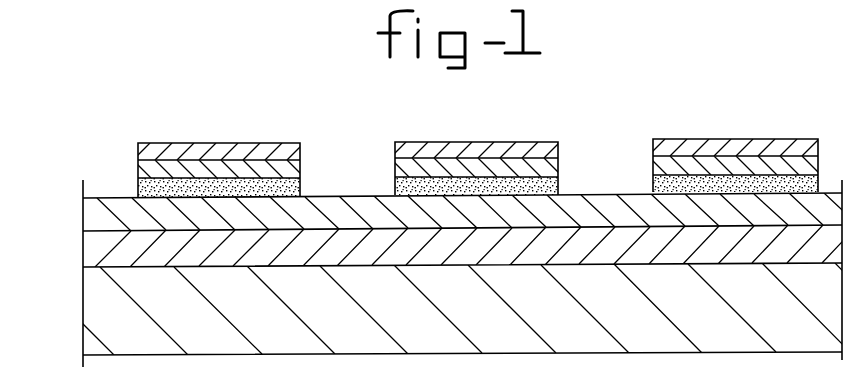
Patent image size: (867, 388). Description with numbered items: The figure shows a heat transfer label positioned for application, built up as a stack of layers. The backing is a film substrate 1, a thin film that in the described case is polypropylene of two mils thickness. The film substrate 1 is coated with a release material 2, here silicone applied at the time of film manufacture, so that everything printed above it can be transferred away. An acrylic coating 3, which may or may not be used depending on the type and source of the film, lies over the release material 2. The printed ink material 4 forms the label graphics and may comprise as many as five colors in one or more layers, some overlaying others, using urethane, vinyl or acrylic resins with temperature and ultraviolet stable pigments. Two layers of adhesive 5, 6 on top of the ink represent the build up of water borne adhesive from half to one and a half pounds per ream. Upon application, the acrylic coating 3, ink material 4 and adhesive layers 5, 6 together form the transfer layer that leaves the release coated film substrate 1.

The film substrate 1 is at (112, 320).
The release material 2 is at (107, 253).
The acrylic coating 3 is at (97, 217).
The printed ink material 4 is at (745, 187).
The adhesive layer 5 is at (475, 168).
The adhesive layer 6 is at (200, 150).